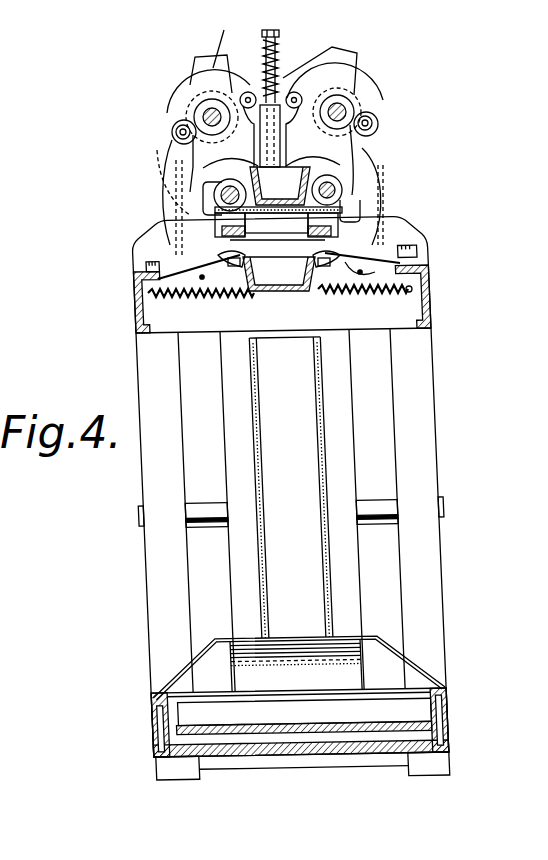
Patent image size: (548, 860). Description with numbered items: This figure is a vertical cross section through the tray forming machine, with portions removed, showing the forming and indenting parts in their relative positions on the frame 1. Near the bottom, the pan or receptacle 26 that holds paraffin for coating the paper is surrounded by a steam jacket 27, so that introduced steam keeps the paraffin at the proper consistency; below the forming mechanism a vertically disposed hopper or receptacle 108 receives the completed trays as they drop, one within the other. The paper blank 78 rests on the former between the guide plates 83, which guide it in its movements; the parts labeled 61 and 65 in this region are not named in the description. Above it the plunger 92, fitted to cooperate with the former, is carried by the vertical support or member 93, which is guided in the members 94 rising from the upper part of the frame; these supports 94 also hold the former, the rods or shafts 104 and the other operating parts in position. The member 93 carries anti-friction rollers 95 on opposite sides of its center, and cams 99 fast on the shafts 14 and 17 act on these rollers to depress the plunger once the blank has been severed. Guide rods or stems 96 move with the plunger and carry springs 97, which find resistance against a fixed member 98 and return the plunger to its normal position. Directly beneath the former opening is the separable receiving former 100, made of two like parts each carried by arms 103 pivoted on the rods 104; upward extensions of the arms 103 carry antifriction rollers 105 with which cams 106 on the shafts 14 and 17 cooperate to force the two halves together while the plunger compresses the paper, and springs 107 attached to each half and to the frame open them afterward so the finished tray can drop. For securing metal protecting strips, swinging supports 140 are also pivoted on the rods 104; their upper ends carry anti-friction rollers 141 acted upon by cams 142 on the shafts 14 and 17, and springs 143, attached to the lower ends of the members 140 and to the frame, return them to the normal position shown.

The frame 1 is at (290, 486).
The shaft 14 is at (372, 99).
The shaft 17 is at (172, 135).
The pan or receptacle 26 is at (305, 712).
The steam jacket 27 is at (385, 737).
The block 61 is at (276, 225).
The plate 65 is at (279, 251).
The blank 78 is at (345, 171).
The guide plates 83 is at (243, 215).
The plunger 92 is at (378, 131).
The vertical support or member 93 is at (303, 127).
The members 94 is at (271, 153).
The anti-friction rollers 95 is at (250, 91).
The guide rods or stems 96 is at (270, 30).
The springs 97 is at (278, 47).
The fixed member 98 is at (195, 97).
The cams 99 is at (213, 68).
The separable receiving former 100 is at (279, 272).
The arms 103 is at (212, 192).
The rods or shafts 104 is at (245, 202).
The antifriction rollers 105 is at (175, 162).
The cams 106 is at (178, 109).
The springs 107 is at (178, 332).
The hopper or receptacle 108 is at (291, 487).
The swinging supports 140 is at (178, 147).
The anti-friction rollers 141 is at (176, 127).
The cams 142 is at (338, 42).
The springs 143 is at (150, 293).